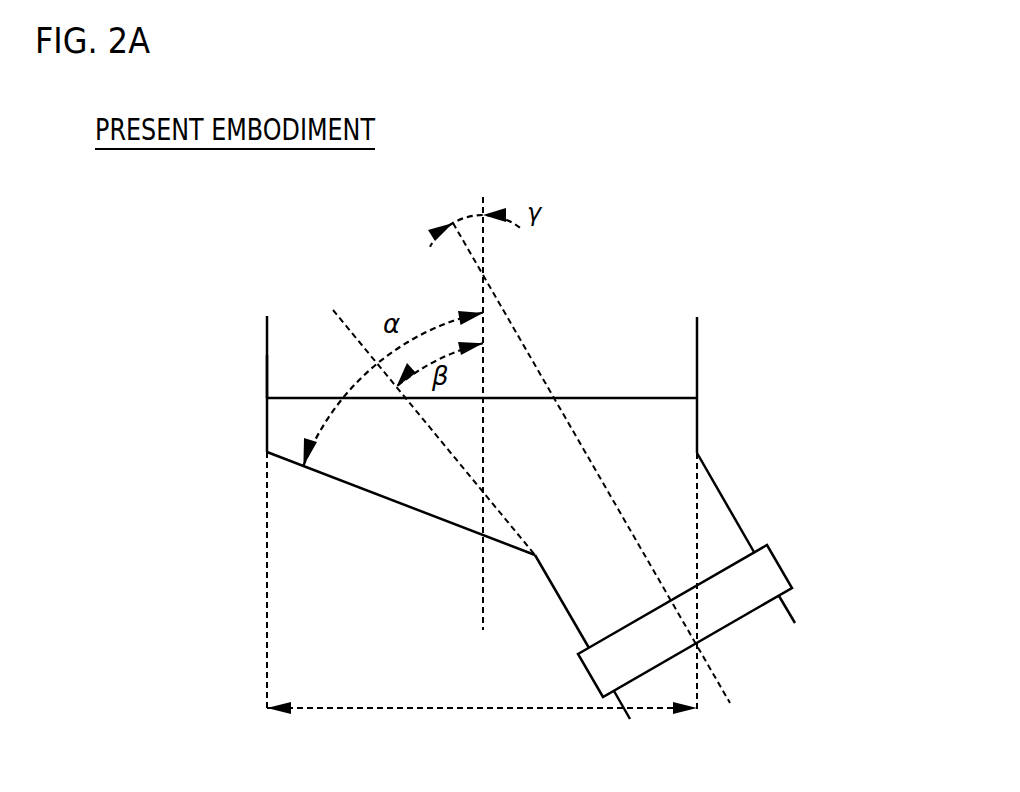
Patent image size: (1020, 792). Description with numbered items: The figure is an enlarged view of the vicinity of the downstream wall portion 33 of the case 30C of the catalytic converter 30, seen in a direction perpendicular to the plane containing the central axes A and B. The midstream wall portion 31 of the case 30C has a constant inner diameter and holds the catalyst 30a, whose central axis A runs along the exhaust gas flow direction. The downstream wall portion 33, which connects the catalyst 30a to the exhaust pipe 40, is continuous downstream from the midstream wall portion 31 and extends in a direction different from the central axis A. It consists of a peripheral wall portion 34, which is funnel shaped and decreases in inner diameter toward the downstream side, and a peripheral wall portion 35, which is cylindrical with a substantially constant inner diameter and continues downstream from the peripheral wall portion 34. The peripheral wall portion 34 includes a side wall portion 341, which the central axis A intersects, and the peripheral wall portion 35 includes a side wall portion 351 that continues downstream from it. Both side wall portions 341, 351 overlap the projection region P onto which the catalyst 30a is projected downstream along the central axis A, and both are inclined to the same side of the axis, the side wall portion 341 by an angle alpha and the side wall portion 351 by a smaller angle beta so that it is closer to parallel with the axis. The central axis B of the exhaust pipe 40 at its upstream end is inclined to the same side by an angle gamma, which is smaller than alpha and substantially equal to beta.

The catalytic converter 30 is at (702, 330).
The midstream wall portion 31 is at (266, 321).
The catalyst 30a is at (288, 370).
The case 30C is at (266, 396).
The downstream wall portion 33 is at (555, 560).
The peripheral wall portion 34 is at (522, 503).
The side wall portion 341 is at (390, 500).
The peripheral wall portion 35 is at (661, 584).
The side wall portion 351 is at (570, 615).
The exhaust pipe 40 is at (793, 615).
The central axis A is at (483, 603).
The central axis B is at (727, 690).
The projection region P is at (483, 712).